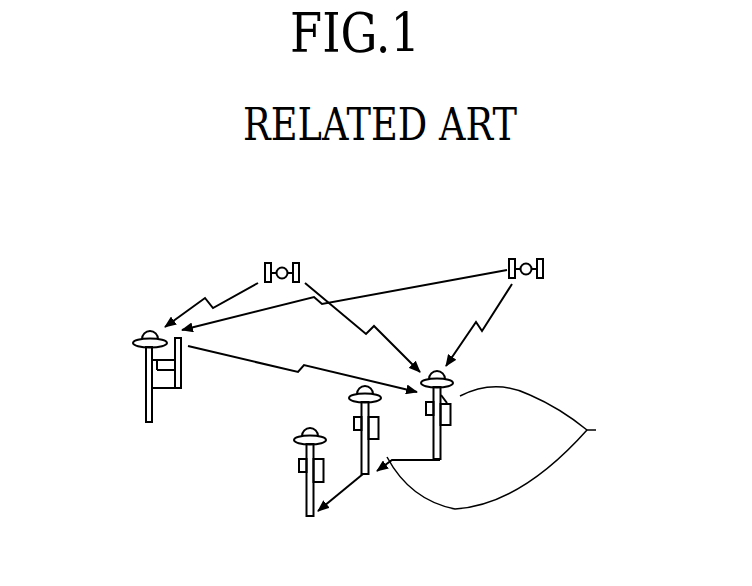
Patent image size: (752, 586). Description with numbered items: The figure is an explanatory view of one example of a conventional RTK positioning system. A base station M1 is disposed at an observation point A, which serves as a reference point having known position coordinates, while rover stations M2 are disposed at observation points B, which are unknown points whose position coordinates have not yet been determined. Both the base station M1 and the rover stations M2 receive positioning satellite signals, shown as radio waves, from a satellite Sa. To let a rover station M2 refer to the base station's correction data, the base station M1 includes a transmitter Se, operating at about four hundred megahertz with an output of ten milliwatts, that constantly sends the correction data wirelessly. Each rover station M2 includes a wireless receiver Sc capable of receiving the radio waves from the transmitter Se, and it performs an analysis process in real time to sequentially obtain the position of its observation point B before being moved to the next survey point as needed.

The base station M1 is at (147, 403).
The observation point A is at (150, 391).
The transmitter Se is at (170, 383).
The satellite Sa is at (395, 254).
The rover station M2 is at (462, 459).
The observation point B is at (373, 459).
The wireless receiver Sc is at (453, 420).